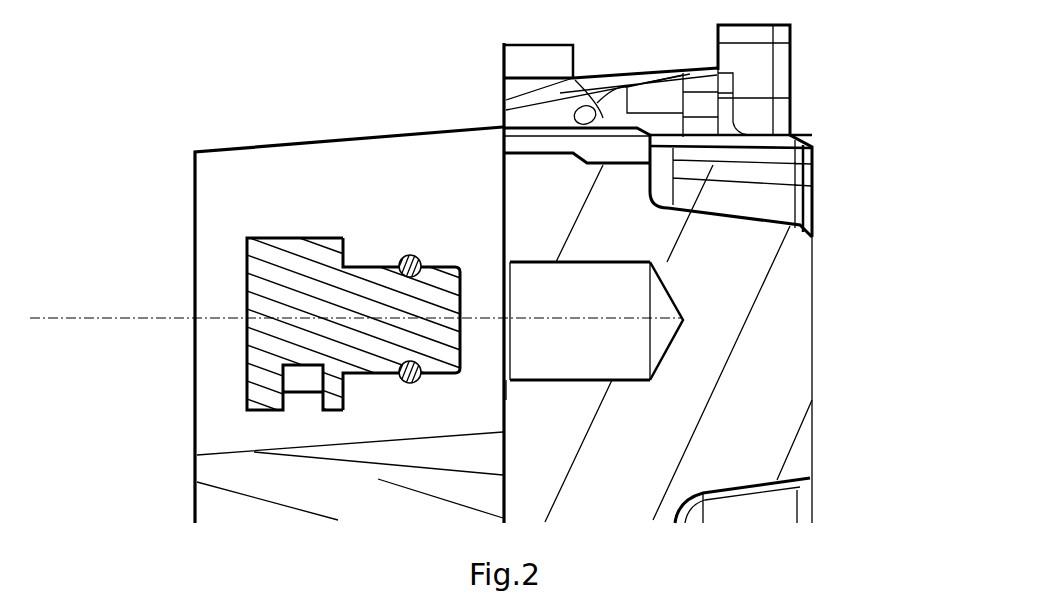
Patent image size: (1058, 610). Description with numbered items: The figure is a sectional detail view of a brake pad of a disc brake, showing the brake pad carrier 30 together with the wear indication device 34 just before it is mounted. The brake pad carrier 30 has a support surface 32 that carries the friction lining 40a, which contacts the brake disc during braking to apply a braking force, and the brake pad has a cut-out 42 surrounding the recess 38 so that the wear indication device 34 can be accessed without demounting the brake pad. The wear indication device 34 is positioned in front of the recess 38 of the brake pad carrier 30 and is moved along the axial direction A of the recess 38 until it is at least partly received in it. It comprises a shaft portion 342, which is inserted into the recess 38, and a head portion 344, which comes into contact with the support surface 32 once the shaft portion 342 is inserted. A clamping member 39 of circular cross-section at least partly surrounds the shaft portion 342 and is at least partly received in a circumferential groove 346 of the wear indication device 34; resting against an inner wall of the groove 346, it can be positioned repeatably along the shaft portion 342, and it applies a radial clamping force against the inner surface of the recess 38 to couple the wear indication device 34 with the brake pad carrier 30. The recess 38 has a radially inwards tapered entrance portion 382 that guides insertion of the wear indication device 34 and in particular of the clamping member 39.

The axial direction A is at (148, 318).
The brake pad carrier 30 is at (773, 383).
The support surface 32 is at (507, 210).
The wear indication device 34 is at (318, 313).
The shaft portion 342 is at (353, 267).
The head portion 344 is at (273, 278).
The circumferential groove 346 is at (428, 266).
The recess 38 is at (642, 288).
The tapered entrance portion 382 is at (505, 380).
The clamping member 39 is at (397, 384).
The friction lining 40a is at (212, 473).
The cut-out 42 is at (224, 387).